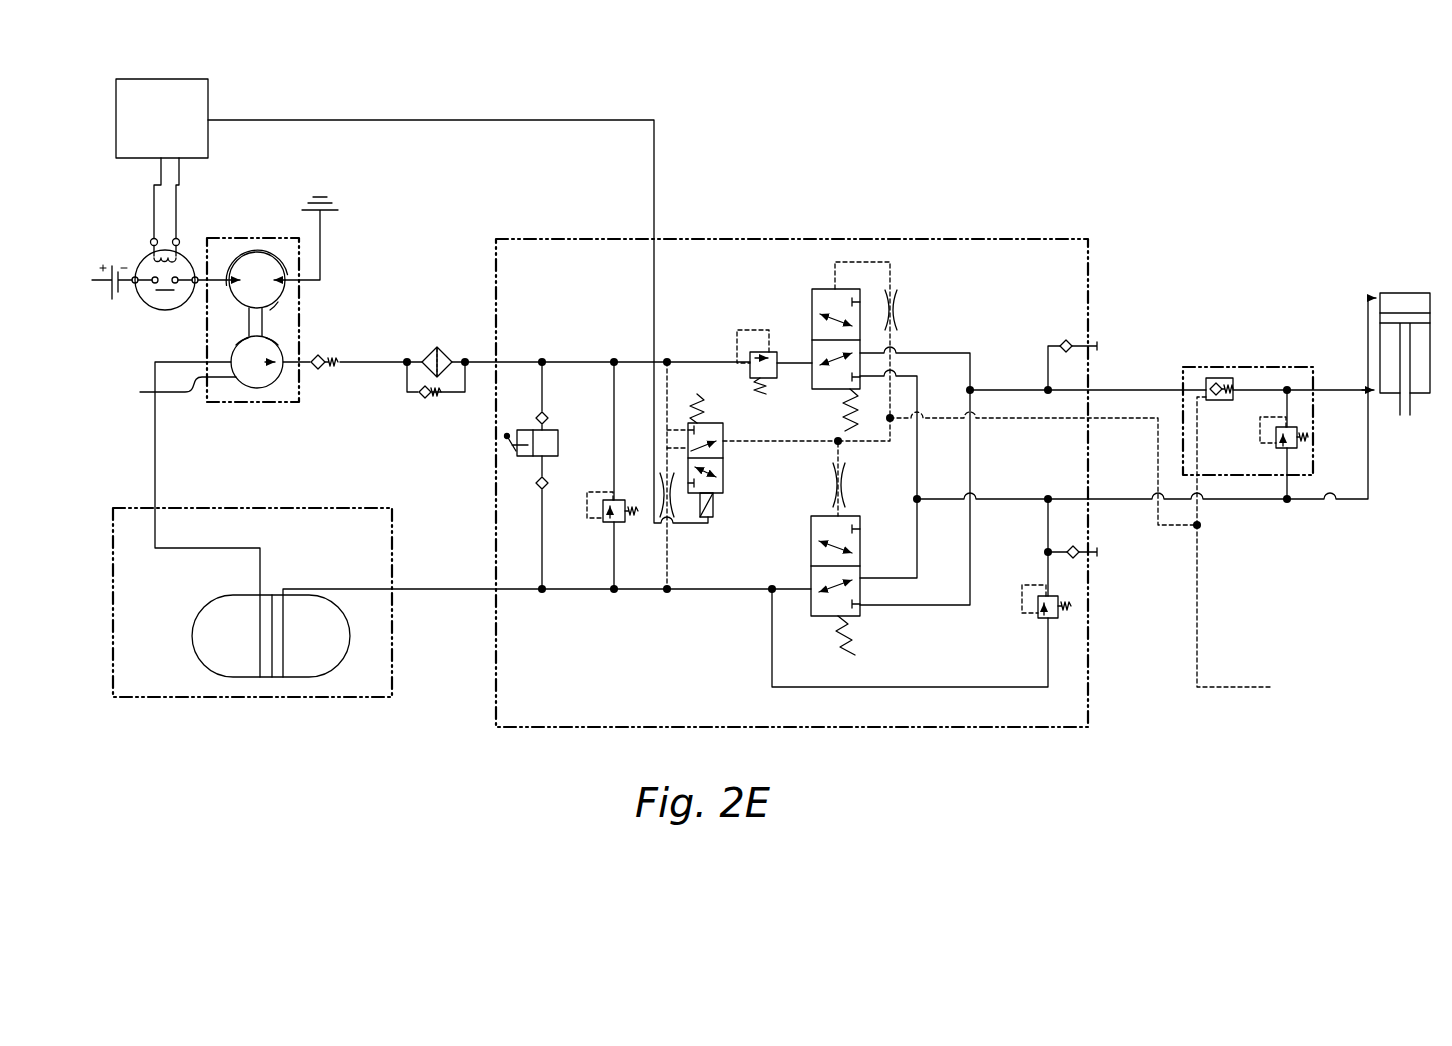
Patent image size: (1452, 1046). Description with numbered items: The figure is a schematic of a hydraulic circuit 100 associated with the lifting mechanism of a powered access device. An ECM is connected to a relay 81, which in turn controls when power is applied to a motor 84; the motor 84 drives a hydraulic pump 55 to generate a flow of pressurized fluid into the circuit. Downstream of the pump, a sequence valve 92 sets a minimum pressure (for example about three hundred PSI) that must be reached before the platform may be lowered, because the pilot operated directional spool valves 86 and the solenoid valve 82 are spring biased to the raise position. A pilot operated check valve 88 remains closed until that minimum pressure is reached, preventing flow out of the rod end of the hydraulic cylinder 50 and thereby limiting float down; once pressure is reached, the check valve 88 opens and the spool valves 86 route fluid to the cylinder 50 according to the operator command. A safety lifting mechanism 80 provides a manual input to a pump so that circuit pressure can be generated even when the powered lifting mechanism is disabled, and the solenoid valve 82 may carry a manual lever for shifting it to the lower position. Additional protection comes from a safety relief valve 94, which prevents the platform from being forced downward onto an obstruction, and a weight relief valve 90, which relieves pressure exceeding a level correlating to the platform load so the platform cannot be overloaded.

The hydraulic circuit 100 is at (1152, 102).
The relay 81 is at (187, 252).
The motor 84 is at (257, 254).
The hydraulic pump 55 is at (180, 519).
The safety lifting mechanism 80 is at (515, 455).
The solenoid valve 82 is at (723, 482).
The sequence valve 92 is at (763, 345).
The pilot operated directional spool valves 86 is at (837, 614).
The safety relief valve 94 is at (1058, 623).
The pilot operated check valve 88 is at (1217, 378).
The weight relief valve 90 is at (1297, 455).
The hydraulic cylinder 50 is at (1380, 296).